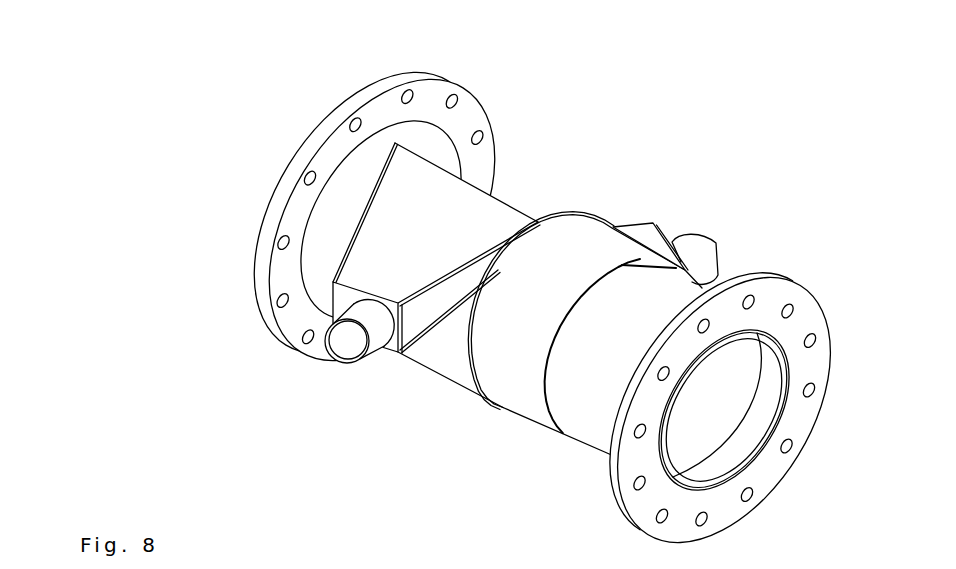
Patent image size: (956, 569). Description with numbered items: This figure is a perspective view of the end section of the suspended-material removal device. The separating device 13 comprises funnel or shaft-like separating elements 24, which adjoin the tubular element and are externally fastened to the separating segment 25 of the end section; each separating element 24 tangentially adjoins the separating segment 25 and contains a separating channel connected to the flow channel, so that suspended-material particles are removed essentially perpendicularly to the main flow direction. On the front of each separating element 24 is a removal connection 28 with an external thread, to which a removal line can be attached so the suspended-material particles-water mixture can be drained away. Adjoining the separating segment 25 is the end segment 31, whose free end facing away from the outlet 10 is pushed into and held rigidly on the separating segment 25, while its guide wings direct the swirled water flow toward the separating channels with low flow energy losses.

The outlet 10 is at (733, 415).
The separating device 13 is at (664, 201).
The separating element 24 is at (425, 208).
The separating segment 25 is at (517, 190).
The removal connection 28 is at (706, 260).
The end segment 31 is at (551, 451).